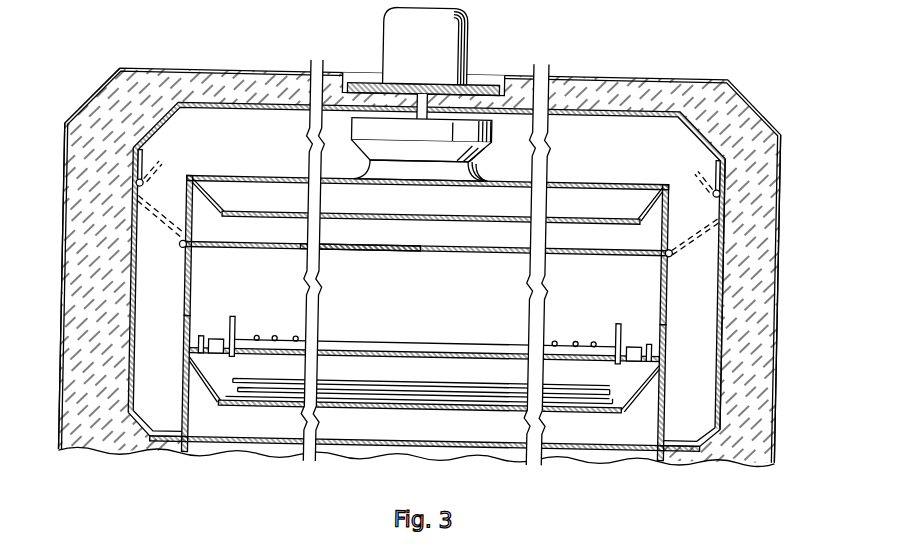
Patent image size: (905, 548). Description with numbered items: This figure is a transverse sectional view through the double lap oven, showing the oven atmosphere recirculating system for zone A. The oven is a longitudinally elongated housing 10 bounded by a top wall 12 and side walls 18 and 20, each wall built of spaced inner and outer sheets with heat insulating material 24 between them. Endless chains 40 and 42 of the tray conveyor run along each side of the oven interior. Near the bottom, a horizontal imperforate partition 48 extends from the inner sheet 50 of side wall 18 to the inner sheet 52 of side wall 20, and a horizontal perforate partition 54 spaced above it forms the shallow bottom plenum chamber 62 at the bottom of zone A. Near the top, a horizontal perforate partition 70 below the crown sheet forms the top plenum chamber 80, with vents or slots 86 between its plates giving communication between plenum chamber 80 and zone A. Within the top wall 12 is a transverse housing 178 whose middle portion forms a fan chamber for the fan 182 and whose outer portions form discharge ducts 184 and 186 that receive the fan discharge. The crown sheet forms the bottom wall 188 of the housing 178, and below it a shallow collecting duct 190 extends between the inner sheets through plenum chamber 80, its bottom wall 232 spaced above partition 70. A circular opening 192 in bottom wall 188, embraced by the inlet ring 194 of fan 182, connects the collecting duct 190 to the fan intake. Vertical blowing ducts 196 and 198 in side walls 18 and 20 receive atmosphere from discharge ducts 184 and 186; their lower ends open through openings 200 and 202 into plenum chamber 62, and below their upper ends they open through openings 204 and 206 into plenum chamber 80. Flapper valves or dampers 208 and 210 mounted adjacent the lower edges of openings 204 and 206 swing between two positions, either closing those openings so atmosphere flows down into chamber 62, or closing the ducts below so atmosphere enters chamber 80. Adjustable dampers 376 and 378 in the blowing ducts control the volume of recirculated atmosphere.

The housing 10 is at (777, 311).
The top wall 12 is at (201, 74).
The side wall 18 is at (62, 199).
The side wall 20 is at (781, 243).
The heat insulating material 24 is at (78, 155).
The endless chain 40 is at (209, 341).
The endless chain 42 is at (646, 338).
The horizontal imperforate partition 48 is at (453, 447).
The inner sheet 50 is at (198, 456).
The inner sheet 52 is at (666, 447).
The horizontal perforate partition 54 is at (407, 400).
The plenum chamber 62 is at (361, 429).
The horizontal perforate partition 70 is at (406, 250).
The plenum chamber 80 is at (407, 236).
The vents or slots 86 is at (366, 251).
The housing 178 is at (265, 114).
The fan 182 is at (483, 144).
The discharge duct 184 is at (234, 163).
The discharge duct 186 is at (577, 168).
The bottom wall 188 is at (625, 181).
The collecting duct 190 is at (378, 205).
The circular opening 192 is at (433, 185).
The inlet ring 194 is at (473, 171).
The vertical blowing duct 196 is at (141, 291).
The vertical blowing duct 198 is at (678, 293).
The opening 200 is at (187, 404).
The opening 202 is at (668, 423).
The opening 204 is at (192, 226).
The opening 206 is at (662, 225).
The flapper valve or damper 208 is at (184, 219).
The flapper valve or damper 210 is at (669, 210).
The bottom wall 232 is at (519, 217).
The adjustable damper 376 is at (146, 170).
The adjustable damper 378 is at (706, 162).
The zone A is at (415, 316).